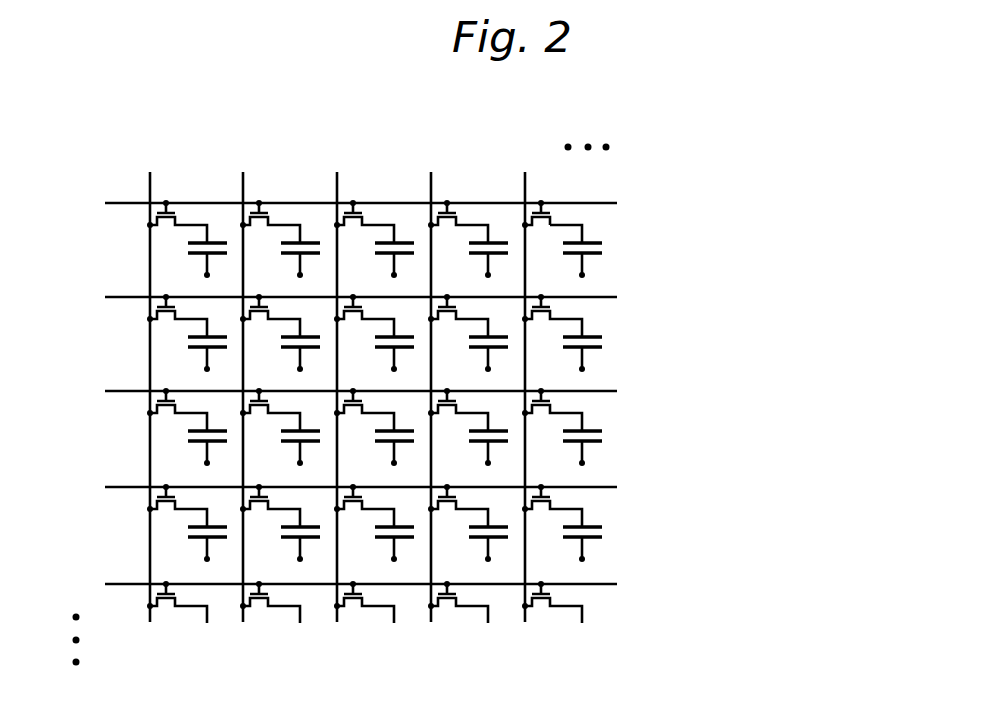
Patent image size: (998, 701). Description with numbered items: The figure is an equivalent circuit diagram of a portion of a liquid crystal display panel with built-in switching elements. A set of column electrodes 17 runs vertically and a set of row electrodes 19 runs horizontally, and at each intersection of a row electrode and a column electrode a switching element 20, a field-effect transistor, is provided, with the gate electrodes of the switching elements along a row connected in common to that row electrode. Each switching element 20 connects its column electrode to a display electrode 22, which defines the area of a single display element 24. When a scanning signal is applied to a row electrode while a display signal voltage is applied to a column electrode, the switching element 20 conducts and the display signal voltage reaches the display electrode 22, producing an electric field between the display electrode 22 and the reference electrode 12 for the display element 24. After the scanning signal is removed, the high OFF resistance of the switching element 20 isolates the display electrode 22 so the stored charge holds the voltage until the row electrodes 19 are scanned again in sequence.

The reference electrode 12 is at (584, 277).
The set of column electrodes 17 is at (613, 115).
The set of row electrodes 19 is at (67, 660).
The switching element 20 is at (552, 214).
The display electrode 22 is at (582, 229).
The display element 24 is at (603, 250).